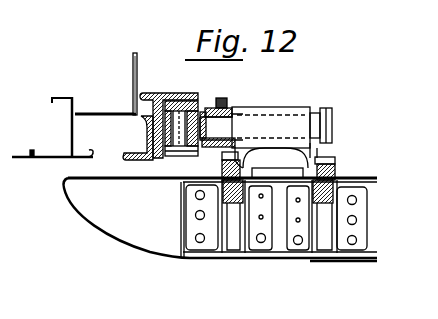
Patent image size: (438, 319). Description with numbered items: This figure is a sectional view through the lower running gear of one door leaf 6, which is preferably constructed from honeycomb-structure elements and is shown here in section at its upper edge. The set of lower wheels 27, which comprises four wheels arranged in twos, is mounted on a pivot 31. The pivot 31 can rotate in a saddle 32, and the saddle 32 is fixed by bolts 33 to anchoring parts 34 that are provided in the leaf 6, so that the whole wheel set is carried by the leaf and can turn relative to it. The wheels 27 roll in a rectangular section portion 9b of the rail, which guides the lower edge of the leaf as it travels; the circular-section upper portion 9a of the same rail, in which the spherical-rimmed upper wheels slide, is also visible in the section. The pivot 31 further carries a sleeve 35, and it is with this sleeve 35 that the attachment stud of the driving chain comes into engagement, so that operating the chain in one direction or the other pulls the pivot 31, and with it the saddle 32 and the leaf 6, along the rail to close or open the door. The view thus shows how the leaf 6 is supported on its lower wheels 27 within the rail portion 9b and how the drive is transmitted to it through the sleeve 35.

The circular-section upper portion of the rail 9a is at (147, 131).
The rectangular section portion of the rail 9b is at (178, 96).
The lower wheels 27 is at (195, 98).
The sleeve 35 is at (221, 98).
The pivot 31 is at (232, 118).
The saddle 32 is at (280, 120).
The bolts 33 is at (228, 154).
The anchoring parts 34 is at (337, 178).
The leaf 6 is at (262, 253).